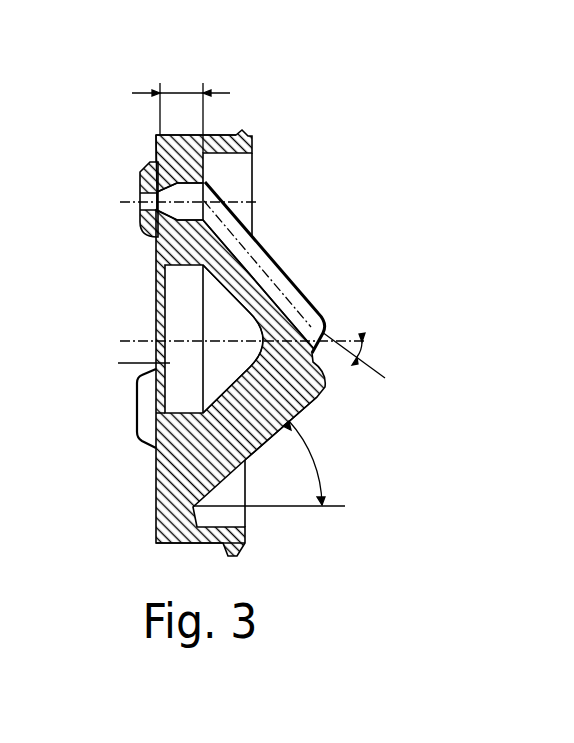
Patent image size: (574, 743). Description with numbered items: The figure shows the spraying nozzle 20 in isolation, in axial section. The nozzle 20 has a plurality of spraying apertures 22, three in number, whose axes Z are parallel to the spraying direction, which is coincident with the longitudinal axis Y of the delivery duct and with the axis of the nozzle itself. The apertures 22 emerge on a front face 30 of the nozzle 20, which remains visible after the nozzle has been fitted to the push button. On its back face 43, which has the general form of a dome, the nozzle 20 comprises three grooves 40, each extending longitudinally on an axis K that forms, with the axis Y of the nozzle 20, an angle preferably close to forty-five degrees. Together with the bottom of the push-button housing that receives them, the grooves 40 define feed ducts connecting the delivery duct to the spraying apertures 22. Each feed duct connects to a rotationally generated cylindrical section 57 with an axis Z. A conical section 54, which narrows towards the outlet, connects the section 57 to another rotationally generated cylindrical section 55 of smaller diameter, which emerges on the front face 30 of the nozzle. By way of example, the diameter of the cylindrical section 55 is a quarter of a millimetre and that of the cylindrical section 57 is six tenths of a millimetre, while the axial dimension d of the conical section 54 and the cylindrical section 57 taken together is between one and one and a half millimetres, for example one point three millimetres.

The nozzle 20 is at (153, 467).
The spraying apertures 22 is at (138, 192).
The front face 30 is at (153, 521).
The grooves 40 is at (252, 253).
The back face 43 is at (256, 437).
The conical section 54 is at (153, 237).
The cylindrical section 55 is at (158, 162).
The cylindrical section 57 is at (222, 135).
The axial dimension d is at (181, 107).
The axis K is at (331, 341).
The longitudinal axis Y is at (243, 323).
The axes Z is at (252, 198).